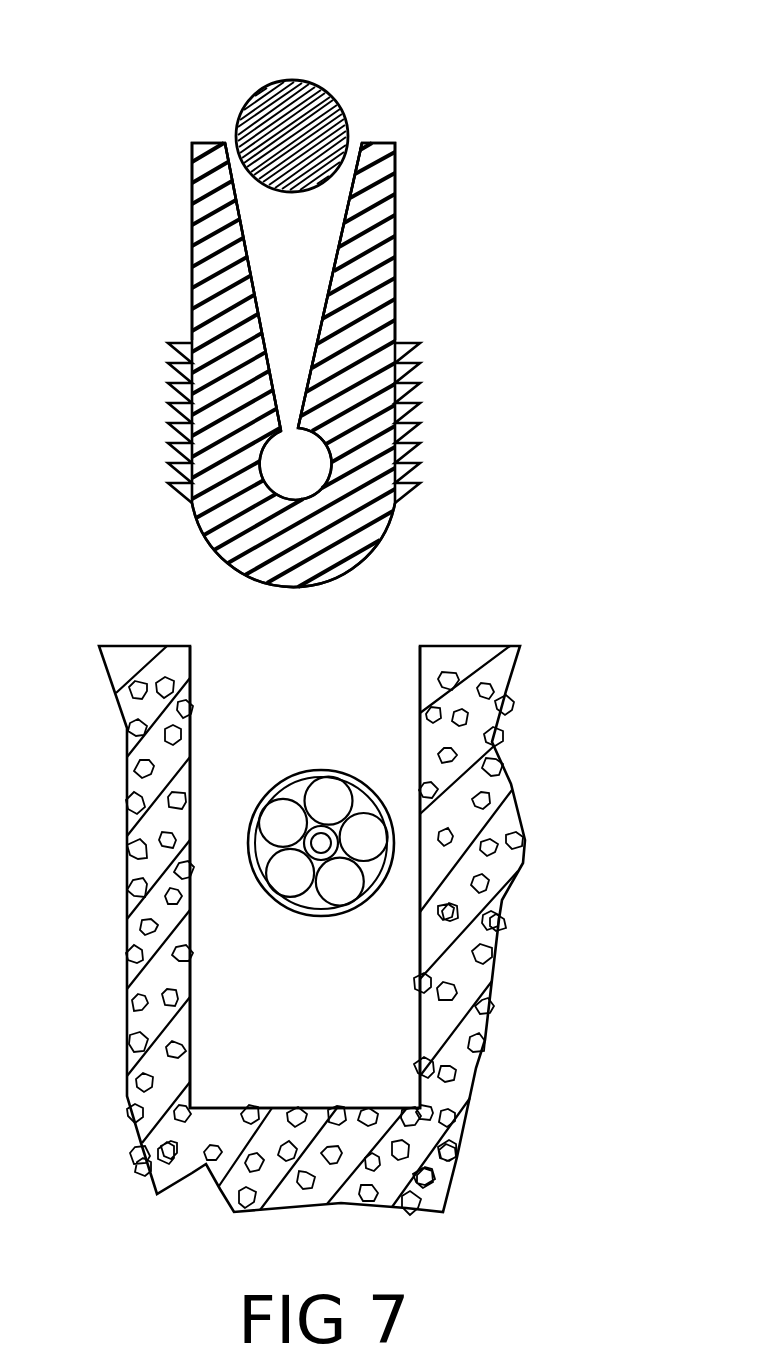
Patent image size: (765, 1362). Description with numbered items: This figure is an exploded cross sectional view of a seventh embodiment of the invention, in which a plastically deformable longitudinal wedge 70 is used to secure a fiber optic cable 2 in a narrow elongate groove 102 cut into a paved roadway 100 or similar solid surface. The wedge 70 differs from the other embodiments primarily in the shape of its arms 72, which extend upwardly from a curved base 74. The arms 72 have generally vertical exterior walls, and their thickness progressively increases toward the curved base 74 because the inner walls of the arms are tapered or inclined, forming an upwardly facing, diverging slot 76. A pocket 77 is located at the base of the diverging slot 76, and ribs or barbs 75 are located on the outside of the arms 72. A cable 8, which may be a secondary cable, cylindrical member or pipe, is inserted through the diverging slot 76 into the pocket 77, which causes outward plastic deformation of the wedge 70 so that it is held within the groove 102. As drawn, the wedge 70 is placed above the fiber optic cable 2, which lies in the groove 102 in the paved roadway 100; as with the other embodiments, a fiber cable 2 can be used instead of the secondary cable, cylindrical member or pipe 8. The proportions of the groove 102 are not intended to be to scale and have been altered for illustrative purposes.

The fiber optic cable 2 is at (320, 750).
The cable 8 is at (255, 87).
The wedge 70 is at (180, 183).
The arms 72 is at (197, 230).
The base 74 is at (337, 523).
The ribs or barbs 75 is at (170, 343).
The diverging slot 76 is at (326, 197).
The pocket 77 is at (303, 465).
The paved roadway 100 is at (460, 768).
The groove 102 is at (322, 993).